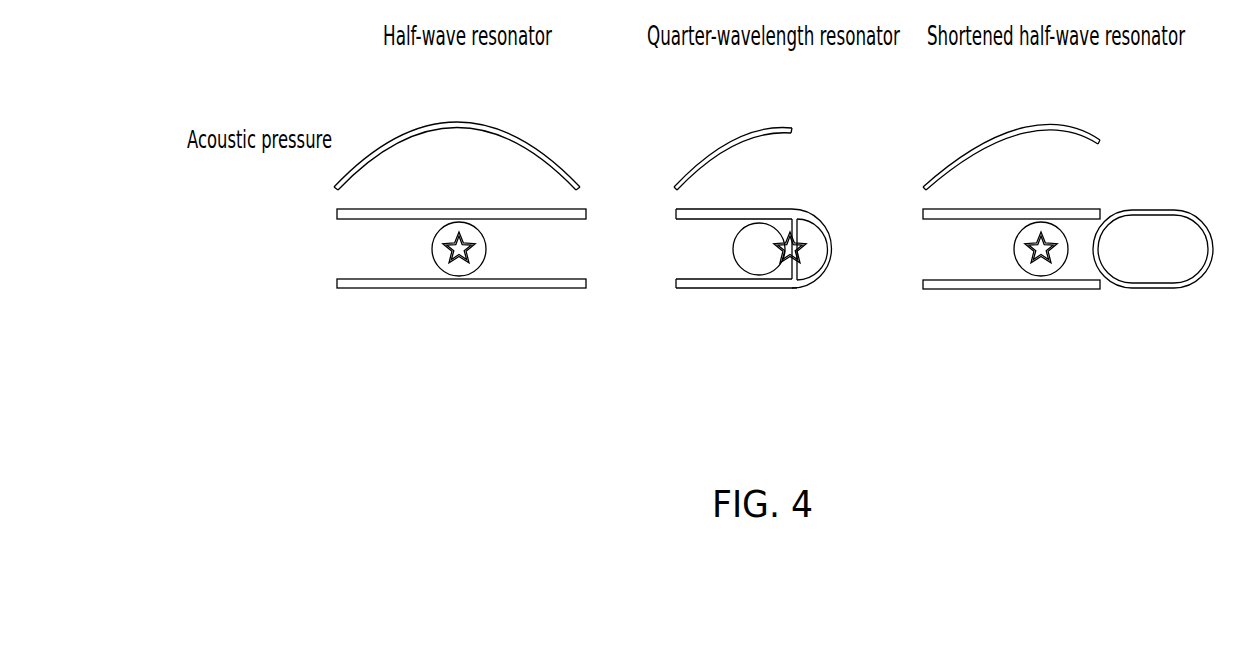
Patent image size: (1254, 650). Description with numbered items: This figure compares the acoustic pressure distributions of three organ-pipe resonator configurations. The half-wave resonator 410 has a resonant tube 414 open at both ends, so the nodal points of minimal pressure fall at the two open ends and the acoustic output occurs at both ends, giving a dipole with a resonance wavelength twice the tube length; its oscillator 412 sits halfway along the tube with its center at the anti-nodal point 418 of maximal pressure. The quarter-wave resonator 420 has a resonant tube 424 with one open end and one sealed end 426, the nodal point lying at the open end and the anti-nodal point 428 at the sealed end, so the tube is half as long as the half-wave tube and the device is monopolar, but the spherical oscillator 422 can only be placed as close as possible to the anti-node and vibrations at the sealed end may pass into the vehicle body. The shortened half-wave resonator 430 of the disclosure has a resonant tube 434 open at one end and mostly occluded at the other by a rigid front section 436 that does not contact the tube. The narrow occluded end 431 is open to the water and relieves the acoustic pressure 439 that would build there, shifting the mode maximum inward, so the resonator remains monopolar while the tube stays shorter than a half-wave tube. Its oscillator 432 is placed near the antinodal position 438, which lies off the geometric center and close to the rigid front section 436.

The half-wave resonator 410 is at (358, 320).
The oscillator 412 is at (437, 265).
The resonant tube 414 is at (337, 288).
The anti-nodal point 418 is at (470, 264).
The quarter-wave resonator 420 is at (661, 320).
The oscillator 422 is at (742, 267).
The resonant tube 424 is at (676, 283).
The sealed end 426 is at (792, 288).
The anti-nodal point 428 is at (792, 210).
The shortened half-wave resonator 430 is at (971, 314).
The occluded end 431 is at (1097, 208).
The oscillator 432 is at (1022, 266).
The resonant tube 434 is at (925, 289).
The rigid front section 436 is at (1137, 288).
The antinodal position 438 is at (1051, 265).
The acoustic pressure 439 is at (1093, 135).